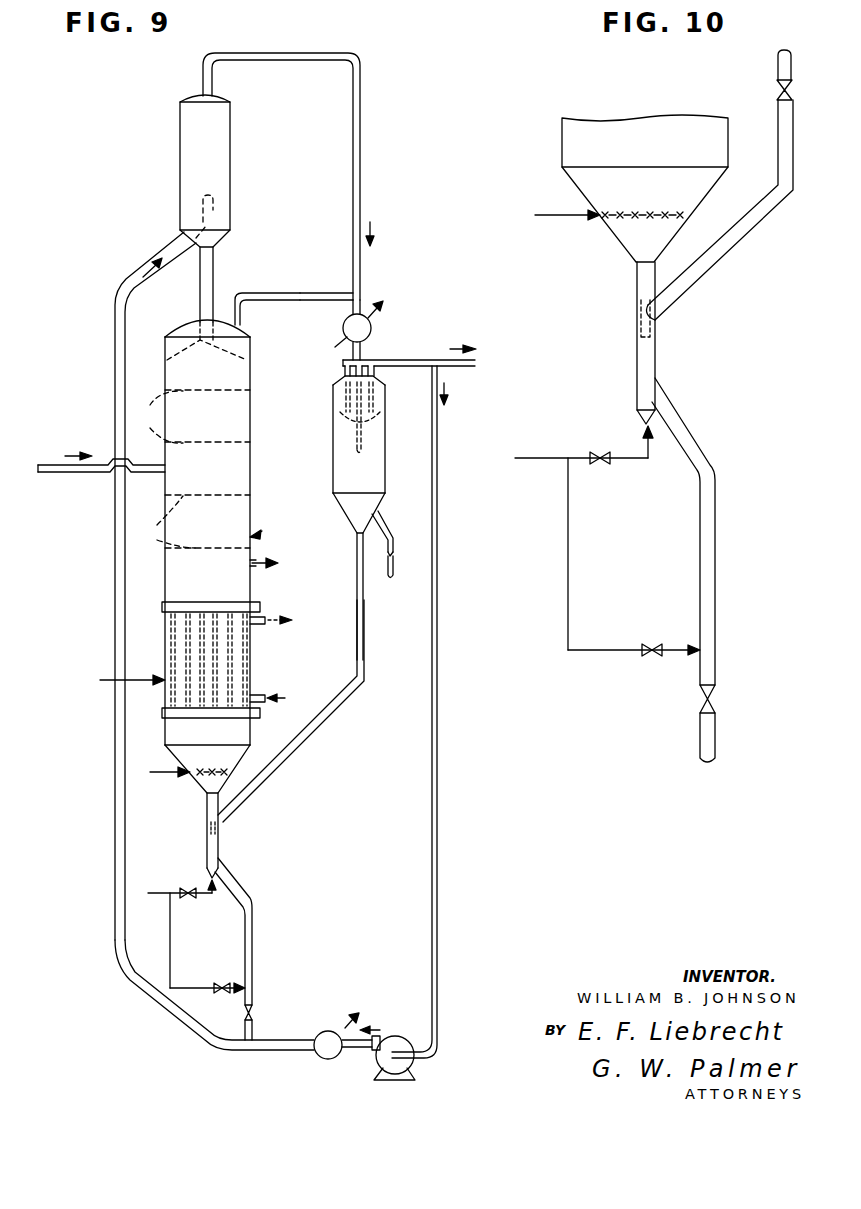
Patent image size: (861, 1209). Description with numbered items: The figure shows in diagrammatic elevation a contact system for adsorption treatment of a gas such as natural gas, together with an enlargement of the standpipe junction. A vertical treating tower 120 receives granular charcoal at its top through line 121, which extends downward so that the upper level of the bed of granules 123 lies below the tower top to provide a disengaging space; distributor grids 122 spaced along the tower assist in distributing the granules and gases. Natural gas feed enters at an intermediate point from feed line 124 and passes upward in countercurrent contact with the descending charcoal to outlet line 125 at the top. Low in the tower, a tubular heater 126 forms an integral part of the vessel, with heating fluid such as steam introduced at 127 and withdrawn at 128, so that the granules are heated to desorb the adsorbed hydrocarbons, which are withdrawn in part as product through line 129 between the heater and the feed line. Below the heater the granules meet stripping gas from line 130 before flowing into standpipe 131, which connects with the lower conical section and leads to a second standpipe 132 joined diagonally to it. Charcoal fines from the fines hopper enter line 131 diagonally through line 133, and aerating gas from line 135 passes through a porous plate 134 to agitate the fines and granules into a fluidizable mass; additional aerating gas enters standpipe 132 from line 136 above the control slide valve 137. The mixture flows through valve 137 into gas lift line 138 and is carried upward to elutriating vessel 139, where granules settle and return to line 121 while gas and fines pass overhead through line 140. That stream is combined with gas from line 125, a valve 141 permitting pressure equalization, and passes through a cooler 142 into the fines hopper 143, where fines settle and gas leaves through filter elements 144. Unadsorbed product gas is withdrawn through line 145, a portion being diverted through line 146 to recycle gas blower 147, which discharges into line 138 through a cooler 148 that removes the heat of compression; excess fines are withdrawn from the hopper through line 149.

In FIG. 9, the vertical treating tower 120 is at (243, 423).
In FIG. 10, the vertical treating tower 120 is at (570, 137).
In FIG. 9, the line 121 is at (213, 267).
In FIG. 9, the distributor grids 122 is at (162, 469).
In FIG. 9, the upper level of the bed of granules 123 is at (247, 350).
In FIG. 9, the feed line 124 is at (68, 473).
In FIG. 9, the outlet line 125 is at (272, 293).
In FIG. 9, the tubular heater 126 is at (255, 652).
In FIG. 9, the heating fluid inlet 127 is at (262, 692).
In FIG. 9, the heating fluid outlet 128 is at (262, 626).
In FIG. 9, the product line 129 is at (262, 570).
In FIG. 9, the stripping gas line 130 is at (166, 771).
In FIG. 9, the standpipe 131 is at (208, 848).
In FIG. 10, the standpipe 131 is at (648, 363).
In FIG. 9, the second standpipe 132 is at (255, 942).
In FIG. 10, the second standpipe 132 is at (713, 500).
In FIG. 9, the fines line 133 is at (257, 780).
In FIG. 10, the fines line 133 is at (732, 228).
In FIG. 10, the porous plate 134 is at (640, 410).
In FIG. 9, the aerating gas line 135 is at (157, 893).
In FIG. 10, the aerating gas line 135 is at (543, 460).
In FIG. 9, the aerating gas line 136 is at (191, 988).
In FIG. 10, the aerating gas line 136 is at (572, 555).
In FIG. 9, the control slide valve 137 is at (255, 1015).
In FIG. 10, the control slide valve 137 is at (717, 704).
In FIG. 9, the gas lift line 138 is at (175, 1012).
In FIG. 9, the elutriating vessel 139 is at (225, 138).
In FIG. 9, the overhead line 140 is at (300, 53).
In FIG. 9, the valve 141 is at (313, 293).
In FIG. 9, the cooler 142 is at (372, 328).
In FIG. 9, the fines hopper 143 is at (340, 474).
In FIG. 9, the filter elements 144 is at (382, 412).
In FIG. 9, the unadsorbed product line 145 is at (395, 360).
In FIG. 9, the recycle line 146 is at (440, 584).
In FIG. 9, the recycle gas blower 147 is at (390, 1035).
In FIG. 9, the cooler 148 is at (318, 1058).
In FIG. 9, the excess fines line 149 is at (375, 524).